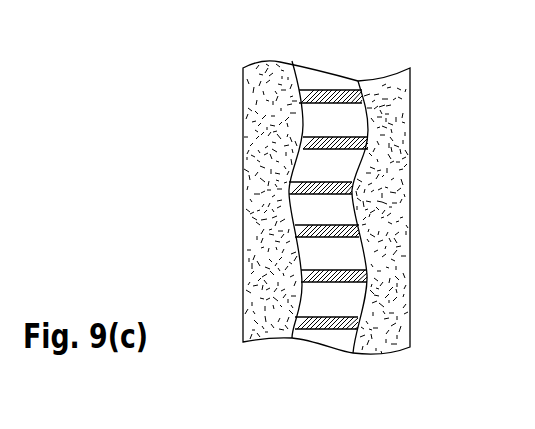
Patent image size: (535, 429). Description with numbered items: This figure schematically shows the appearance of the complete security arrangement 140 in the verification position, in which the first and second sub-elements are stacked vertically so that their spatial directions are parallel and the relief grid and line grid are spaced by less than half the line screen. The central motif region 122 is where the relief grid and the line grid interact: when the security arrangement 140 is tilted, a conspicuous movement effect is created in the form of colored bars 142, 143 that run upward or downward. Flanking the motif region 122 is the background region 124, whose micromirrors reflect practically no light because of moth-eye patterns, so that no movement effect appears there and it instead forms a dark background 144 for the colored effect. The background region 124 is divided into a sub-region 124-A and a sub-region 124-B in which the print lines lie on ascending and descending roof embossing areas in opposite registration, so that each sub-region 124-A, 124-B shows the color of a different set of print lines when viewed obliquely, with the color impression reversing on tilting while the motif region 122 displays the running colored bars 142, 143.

The security arrangement 140 is at (177, 58).
The motif region 122 is at (325, 83).
The background region 124 is at (383, 78).
The sub-region 124-A is at (272, 338).
The sub-region 124-B is at (382, 355).
The colored bar 142 is at (350, 128).
The colored bar 143 is at (345, 168).
The dark background 144 is at (397, 213).